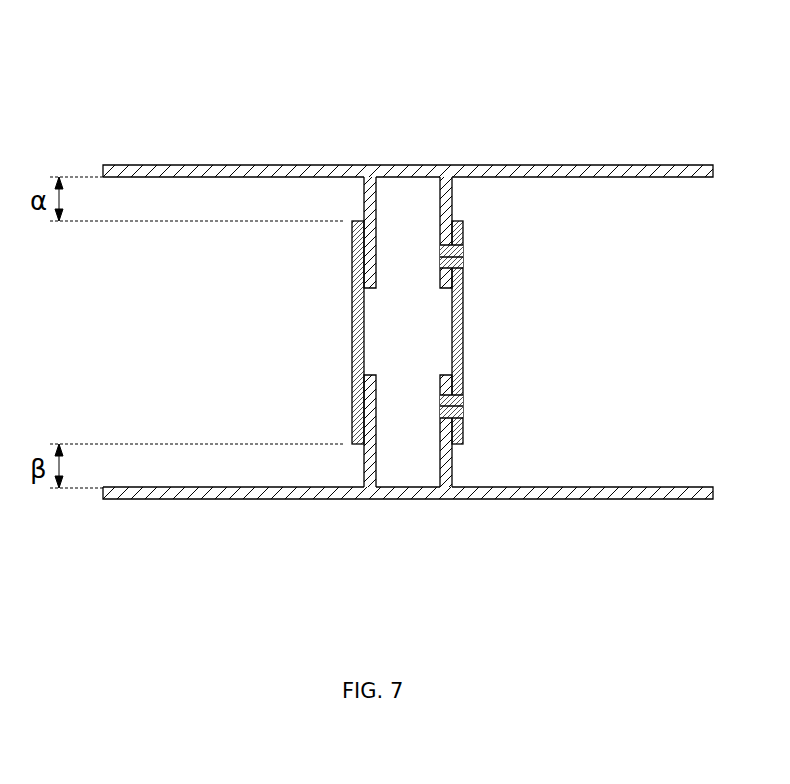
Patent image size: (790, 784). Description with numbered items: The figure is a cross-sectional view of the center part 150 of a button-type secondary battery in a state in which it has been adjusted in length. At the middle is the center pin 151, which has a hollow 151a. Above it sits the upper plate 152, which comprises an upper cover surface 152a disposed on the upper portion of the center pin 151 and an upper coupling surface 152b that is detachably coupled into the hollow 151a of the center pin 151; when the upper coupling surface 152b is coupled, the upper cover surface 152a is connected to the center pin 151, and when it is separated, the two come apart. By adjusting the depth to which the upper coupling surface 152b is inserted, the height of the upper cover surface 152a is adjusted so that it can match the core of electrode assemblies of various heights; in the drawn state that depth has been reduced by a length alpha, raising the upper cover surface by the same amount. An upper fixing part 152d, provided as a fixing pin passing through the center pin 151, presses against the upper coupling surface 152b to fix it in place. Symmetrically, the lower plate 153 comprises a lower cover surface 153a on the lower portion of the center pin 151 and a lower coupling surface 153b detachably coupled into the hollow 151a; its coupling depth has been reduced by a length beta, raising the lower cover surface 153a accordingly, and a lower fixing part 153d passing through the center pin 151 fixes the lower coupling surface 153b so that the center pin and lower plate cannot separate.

The center part 150 is at (408, 322).
The center pin 151 is at (410, 332).
The hollow 151a is at (402, 331).
The upper plate 152 is at (408, 167).
The upper cover surface 152a is at (343, 165).
The upper coupling surface 152b is at (446, 196).
The upper fixing part 152d is at (456, 260).
The lower plate 153 is at (408, 497).
The lower cover surface 153a is at (343, 499).
The lower coupling surface 153b is at (447, 470).
The lower fixing part 153d is at (456, 404).